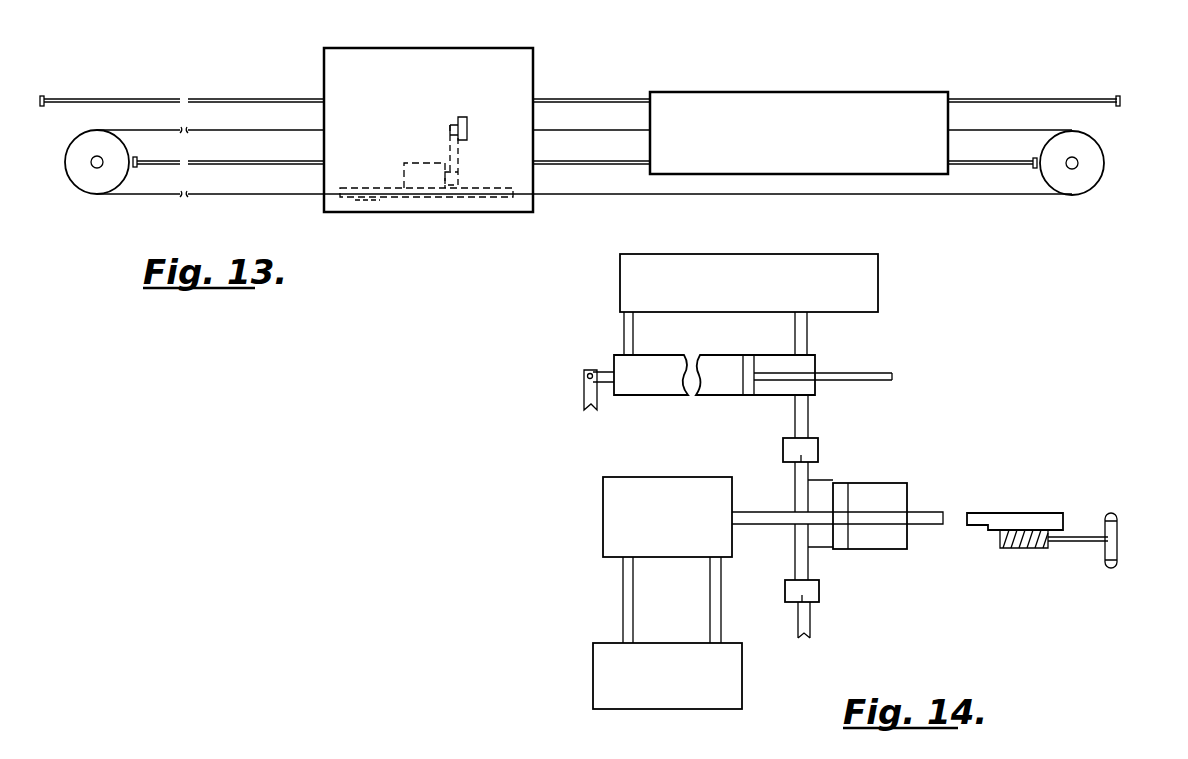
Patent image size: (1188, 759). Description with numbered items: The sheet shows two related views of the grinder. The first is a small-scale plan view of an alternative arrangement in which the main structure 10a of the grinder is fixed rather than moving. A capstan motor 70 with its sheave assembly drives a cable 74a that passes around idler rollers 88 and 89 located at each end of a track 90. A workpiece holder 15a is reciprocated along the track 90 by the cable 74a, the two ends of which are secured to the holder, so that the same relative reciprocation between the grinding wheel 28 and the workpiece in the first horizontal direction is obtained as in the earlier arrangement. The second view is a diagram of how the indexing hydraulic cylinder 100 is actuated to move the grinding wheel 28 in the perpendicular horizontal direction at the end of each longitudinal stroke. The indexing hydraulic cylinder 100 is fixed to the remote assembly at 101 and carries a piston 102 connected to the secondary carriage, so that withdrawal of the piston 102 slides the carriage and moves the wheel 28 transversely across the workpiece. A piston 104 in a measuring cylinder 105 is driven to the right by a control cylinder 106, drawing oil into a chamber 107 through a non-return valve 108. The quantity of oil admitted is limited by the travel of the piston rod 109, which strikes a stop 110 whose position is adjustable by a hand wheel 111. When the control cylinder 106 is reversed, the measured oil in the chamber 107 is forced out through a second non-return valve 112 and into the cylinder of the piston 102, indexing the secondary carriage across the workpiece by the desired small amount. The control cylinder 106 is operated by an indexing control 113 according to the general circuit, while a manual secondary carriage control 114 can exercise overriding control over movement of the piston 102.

In FIG. 13, the main structure 10a is at (393, 57).
In FIG. 13, the workpiece holder 15a is at (848, 92).
In FIG. 13, the grinding wheel 28 is at (467, 118).
In FIG. 13, the capstan motor 70 is at (372, 208).
In FIG. 13, the cable 74a is at (253, 129).
In FIG. 13, the idler roller 88 is at (82, 183).
In FIG. 13, the idler roller 89 is at (1066, 182).
In FIG. 13, the track 90 is at (980, 160).
In FIG. 14, the indexing hydraulic cylinder 100 is at (728, 348).
In FIG. 14, the fixing point of indexing cylinder 101 is at (590, 370).
In FIG. 14, the piston 102 is at (866, 365).
In FIG. 14, the piston 104 is at (841, 486).
In FIG. 14, the measuring cylinder 105 is at (885, 483).
In FIG. 14, the control cylinder 106 is at (648, 477).
In FIG. 14, the chamber 107 is at (802, 535).
In FIG. 14, the non-return valve 108 is at (820, 592).
In FIG. 14, the piston rod 109 is at (930, 511).
In FIG. 14, the stop 110 is at (990, 513).
In FIG. 14, the hand wheel 111 is at (1117, 518).
In FIG. 14, the non-return valve 112 is at (783, 446).
In FIG. 14, the indexing control 113 is at (726, 679).
In FIG. 14, the manual secondary carriage control 114 is at (862, 285).